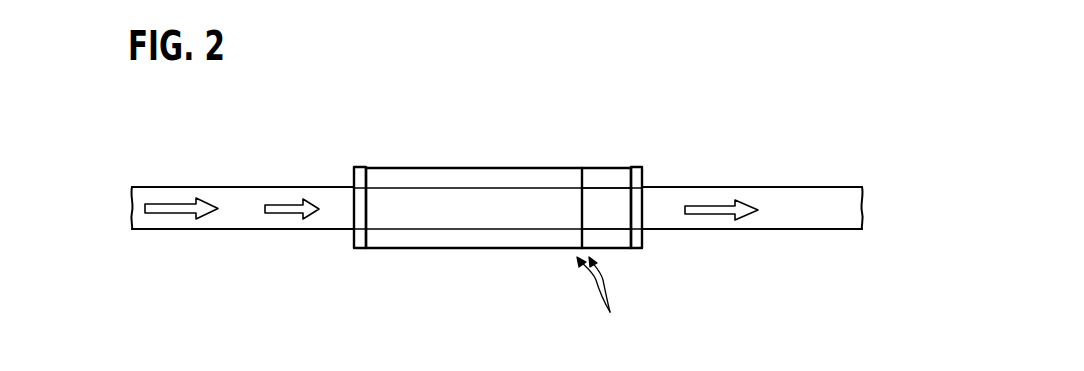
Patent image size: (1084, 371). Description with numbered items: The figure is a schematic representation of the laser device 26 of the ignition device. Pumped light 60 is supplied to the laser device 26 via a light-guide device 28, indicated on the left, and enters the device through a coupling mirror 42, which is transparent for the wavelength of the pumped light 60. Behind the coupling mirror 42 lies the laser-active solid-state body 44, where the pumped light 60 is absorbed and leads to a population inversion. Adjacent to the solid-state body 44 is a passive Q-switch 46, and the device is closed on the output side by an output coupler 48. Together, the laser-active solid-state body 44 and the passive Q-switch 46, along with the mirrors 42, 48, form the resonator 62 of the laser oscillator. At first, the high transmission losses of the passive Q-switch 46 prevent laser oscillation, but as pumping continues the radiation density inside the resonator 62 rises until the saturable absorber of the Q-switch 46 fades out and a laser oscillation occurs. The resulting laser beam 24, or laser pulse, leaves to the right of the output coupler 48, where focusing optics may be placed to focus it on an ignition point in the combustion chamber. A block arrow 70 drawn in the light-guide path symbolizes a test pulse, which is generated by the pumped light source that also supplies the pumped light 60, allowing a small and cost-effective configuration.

The laser beam 24 is at (800, 210).
The laser device 26 is at (497, 205).
The light-guide device 28 is at (237, 210).
The coupling mirror 42 is at (358, 178).
The laser-active solid-state body 44 is at (438, 177).
The passive Q-switch 46 is at (607, 178).
The output coupler 48 is at (637, 178).
The pumped light 60 is at (172, 210).
The resonator 62 is at (605, 299).
The block arrow 70 is at (288, 210).